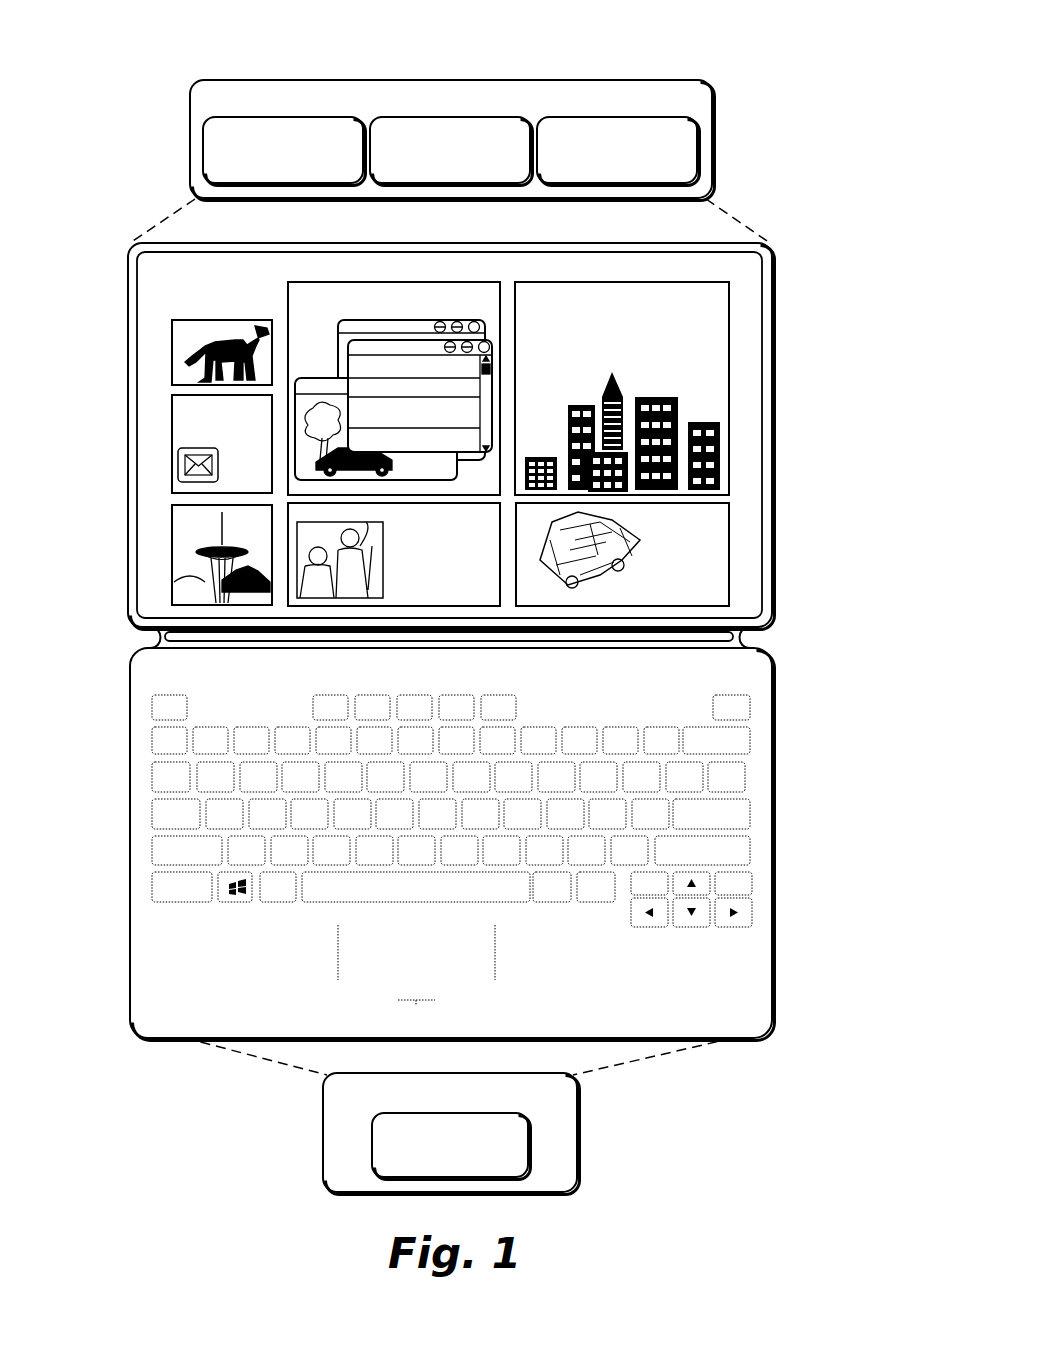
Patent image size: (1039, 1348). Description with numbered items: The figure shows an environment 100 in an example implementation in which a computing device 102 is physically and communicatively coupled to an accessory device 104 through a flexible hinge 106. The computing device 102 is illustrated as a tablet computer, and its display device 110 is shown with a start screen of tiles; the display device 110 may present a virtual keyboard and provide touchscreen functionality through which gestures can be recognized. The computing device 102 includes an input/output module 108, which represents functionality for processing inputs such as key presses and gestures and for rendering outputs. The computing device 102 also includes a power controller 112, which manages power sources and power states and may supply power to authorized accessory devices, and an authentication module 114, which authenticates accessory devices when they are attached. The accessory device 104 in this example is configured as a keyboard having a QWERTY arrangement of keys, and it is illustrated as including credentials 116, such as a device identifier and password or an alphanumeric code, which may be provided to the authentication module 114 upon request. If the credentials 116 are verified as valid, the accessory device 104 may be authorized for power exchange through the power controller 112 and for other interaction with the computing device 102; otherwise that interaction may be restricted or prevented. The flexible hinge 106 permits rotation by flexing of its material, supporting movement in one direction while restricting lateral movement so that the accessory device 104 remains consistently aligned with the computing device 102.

The environment 100 is at (132, 56).
The computing device 102 is at (452, 140).
The accessory device 104 is at (451, 1134).
The flexible hinge 106 is at (128, 637).
The input/output module 108 is at (284, 151).
The display device 110 is at (128, 432).
The power controller 112 is at (451, 151).
The authentication module 114 is at (618, 151).
The credentials 116 is at (451, 1146).